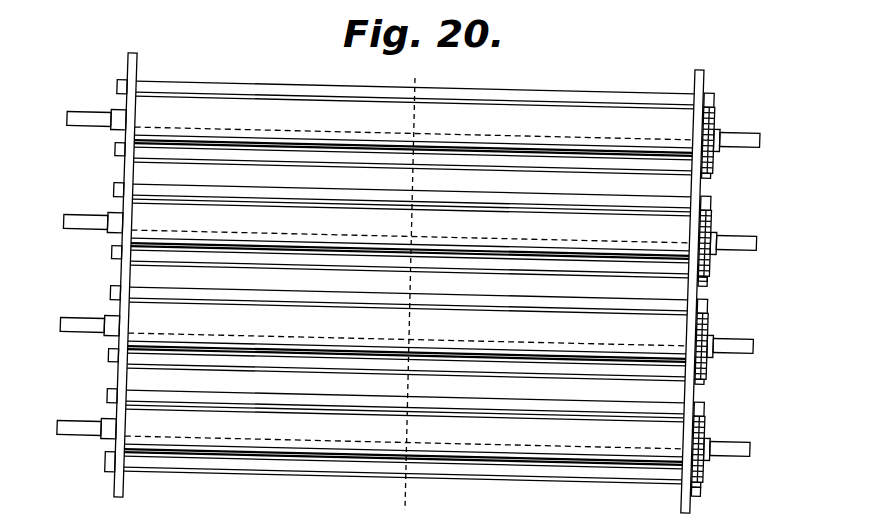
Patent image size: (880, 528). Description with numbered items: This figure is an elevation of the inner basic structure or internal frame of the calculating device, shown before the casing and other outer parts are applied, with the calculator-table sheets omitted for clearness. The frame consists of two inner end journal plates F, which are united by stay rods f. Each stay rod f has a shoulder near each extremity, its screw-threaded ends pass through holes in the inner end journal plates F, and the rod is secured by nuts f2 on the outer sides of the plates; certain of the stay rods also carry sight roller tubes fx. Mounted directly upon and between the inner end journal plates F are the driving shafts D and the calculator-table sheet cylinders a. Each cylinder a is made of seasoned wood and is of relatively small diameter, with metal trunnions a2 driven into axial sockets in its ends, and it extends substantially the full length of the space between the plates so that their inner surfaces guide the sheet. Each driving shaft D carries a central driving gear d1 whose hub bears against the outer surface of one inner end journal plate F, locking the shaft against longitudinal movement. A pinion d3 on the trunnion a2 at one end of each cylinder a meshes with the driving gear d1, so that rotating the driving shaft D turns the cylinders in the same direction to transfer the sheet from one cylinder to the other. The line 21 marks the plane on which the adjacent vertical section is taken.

The inner end journal plate F is at (145, 67).
The sight roller tube fx is at (303, 84).
The calculator-table sheet cylinder a is at (408, 287).
The driving shaft D is at (62, 118).
The metal trunnion a2 is at (113, 128).
The stay rod f is at (116, 85).
The nut f2 is at (121, 71).
The driving gear d1 is at (717, 108).
The pinion d3 is at (718, 129).
The section line 21— 21 is at (409, 292).